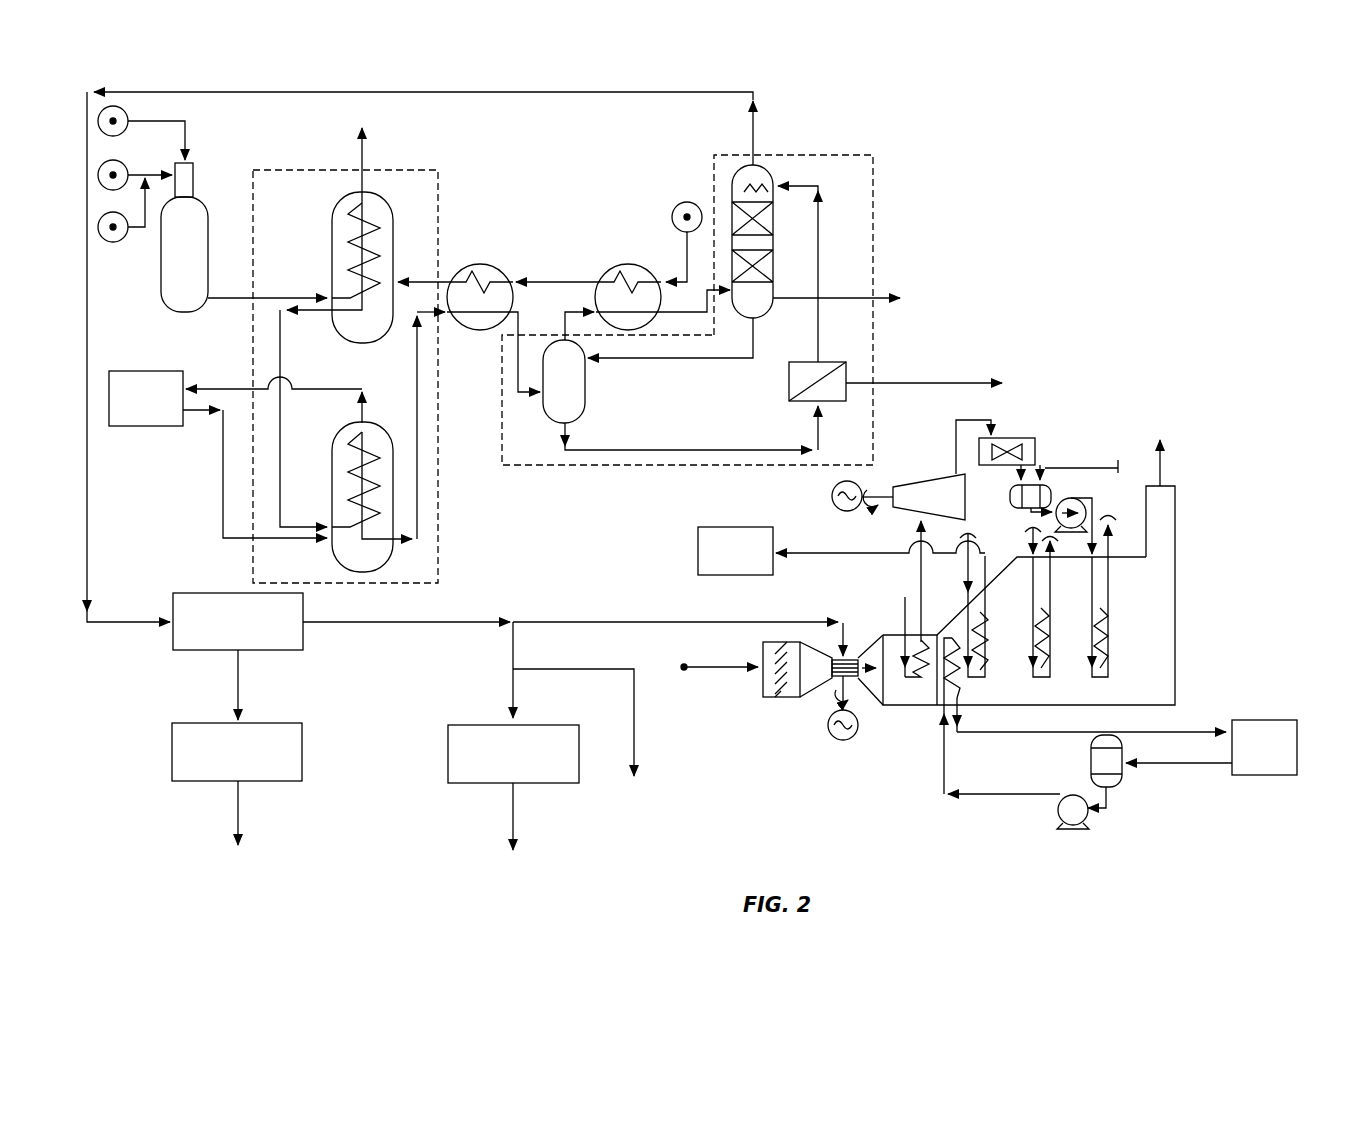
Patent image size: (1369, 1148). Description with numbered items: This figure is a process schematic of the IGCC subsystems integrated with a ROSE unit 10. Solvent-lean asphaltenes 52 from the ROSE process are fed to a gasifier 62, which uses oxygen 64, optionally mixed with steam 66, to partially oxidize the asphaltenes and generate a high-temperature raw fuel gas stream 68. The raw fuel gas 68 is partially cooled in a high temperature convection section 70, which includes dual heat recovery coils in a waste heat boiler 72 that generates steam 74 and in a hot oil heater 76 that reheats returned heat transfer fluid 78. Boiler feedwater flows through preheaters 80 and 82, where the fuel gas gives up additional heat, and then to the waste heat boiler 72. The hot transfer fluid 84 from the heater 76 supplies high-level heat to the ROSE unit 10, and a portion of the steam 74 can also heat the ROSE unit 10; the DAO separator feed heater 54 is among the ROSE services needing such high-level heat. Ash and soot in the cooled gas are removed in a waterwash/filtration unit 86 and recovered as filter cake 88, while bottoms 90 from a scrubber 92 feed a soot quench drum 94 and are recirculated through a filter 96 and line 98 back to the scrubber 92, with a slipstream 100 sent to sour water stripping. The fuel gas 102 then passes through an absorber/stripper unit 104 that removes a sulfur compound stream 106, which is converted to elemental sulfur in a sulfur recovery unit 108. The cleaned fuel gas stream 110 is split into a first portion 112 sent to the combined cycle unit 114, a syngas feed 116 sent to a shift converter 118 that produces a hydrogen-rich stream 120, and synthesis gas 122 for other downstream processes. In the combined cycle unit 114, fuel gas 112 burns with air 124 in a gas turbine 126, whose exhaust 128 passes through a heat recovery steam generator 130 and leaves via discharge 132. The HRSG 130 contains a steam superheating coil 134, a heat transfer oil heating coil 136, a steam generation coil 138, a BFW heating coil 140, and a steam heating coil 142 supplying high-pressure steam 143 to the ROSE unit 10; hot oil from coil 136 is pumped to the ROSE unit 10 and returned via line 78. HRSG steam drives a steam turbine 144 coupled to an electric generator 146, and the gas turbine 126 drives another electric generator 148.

The ROSE unit 10 is at (147, 371).
The solvent-lean asphaltenes stream 52 is at (183, 118).
The DAO separator feed heater 54 is at (752, 142).
The gasifier 62 is at (161, 298).
The oxygen 64 is at (137, 170).
The steam 66 is at (137, 233).
The raw fuel gas stream 68 is at (232, 302).
The high temperature convection section 70 is at (277, 170).
The waste heat boiler 72 is at (332, 258).
The steam 74 is at (358, 150).
The hot oil heater 76 is at (350, 425).
The heat transfer fluid 78 is at (223, 525).
The BFW preheater 80 is at (628, 264).
The BFW preheater 82 is at (479, 264).
The hot transfer fluid 84 is at (340, 389).
The waterwash/filtration unit 86 is at (655, 465).
The filter cake 88 is at (917, 385).
The bottoms 90 is at (712, 360).
The scrubber 92 is at (765, 165).
The soot quench drum 94 is at (590, 402).
The filter 96 is at (789, 380).
The line 98 is at (820, 224).
The slipstream 100 is at (880, 300).
The fuel gas 102 is at (600, 95).
The absorber/stripper unit 104 is at (200, 652).
The sulfur compound stream 106 is at (240, 694).
The sulfur recovery unit 108 is at (304, 772).
The cleaned fuel gas stream 110 is at (417, 622).
The first portion 112 is at (615, 622).
The combined cycle unit 114 is at (846, 815).
The syngas feed 116 is at (512, 690).
The shift converter 118 is at (448, 735).
The hydrogen-rich stream 120 is at (512, 838).
The synthesis gas 122 is at (537, 670).
The air 124 is at (712, 670).
The gas turbine 126 is at (850, 650).
The exhaust 128 is at (860, 682).
The heat recovery steam generator 130 is at (912, 706).
The discharge 132 is at (1163, 480).
The steam superheating coil 134 is at (930, 715).
The heat transfer oil heating coil 136 is at (960, 692).
The steam generation coil 138 is at (1053, 623).
The BFW heating coil 140 is at (1110, 618).
The steam heating coil 142 is at (978, 650).
The high-pressure steam 143 is at (840, 556).
The steam turbine 144 is at (945, 474).
The electric generator 146 is at (832, 490).
The electric generator 148 is at (840, 742).